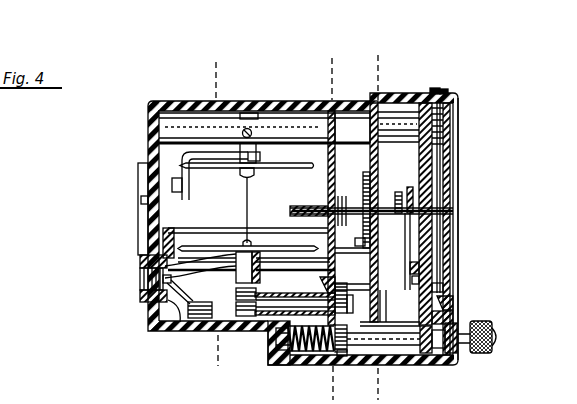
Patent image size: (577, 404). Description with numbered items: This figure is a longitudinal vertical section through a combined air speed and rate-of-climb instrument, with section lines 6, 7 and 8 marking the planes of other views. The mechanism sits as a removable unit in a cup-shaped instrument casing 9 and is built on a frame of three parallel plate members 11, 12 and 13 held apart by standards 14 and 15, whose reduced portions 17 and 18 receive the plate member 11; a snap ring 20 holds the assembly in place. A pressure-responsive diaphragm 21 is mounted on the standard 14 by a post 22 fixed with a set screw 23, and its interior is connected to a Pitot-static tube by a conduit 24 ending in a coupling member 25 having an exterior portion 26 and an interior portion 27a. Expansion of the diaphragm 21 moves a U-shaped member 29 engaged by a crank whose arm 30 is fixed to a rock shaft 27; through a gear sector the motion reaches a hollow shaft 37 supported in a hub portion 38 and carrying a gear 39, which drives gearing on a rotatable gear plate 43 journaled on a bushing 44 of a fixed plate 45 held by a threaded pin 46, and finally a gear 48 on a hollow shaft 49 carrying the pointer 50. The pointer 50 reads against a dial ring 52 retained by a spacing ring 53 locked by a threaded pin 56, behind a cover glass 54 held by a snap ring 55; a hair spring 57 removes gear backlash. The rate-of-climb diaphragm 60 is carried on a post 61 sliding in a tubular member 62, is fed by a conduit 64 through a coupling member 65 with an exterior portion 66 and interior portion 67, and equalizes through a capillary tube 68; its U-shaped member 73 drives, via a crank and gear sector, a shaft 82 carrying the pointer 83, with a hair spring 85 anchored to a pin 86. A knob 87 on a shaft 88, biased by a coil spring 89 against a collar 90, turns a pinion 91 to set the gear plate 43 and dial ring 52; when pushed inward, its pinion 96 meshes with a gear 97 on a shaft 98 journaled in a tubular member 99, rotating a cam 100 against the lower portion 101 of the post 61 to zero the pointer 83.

The section line 6- 6 is at (209, 354).
The section line 7- 7 is at (327, 391).
The section line 8- 8 is at (402, 393).
The instrument casing 9 is at (148, 123).
The plate member 11 is at (373, 300).
The plate member 12 is at (328, 170).
The plate member 13 is at (182, 233).
The standard 14 is at (219, 130).
The standard 15 is at (326, 238).
The reduced portion 17 is at (338, 130).
The reduced portion 18 is at (370, 276).
The snap ring 20 is at (382, 322).
The pressure-responsive diaphragm 21 is at (297, 169).
The post 22 is at (260, 158).
The set screw 23 is at (255, 131).
The conduit 24 is at (192, 186).
The coupling member 25 is at (136, 173).
The exterior portion of coupling member 26 is at (140, 201).
The rock shaft 27 is at (252, 228).
The interior portion of coupling member 27a is at (184, 195).
The U-shaped member 29 is at (255, 176).
The crank arm 30 is at (233, 247).
The hollow shaft 37 is at (406, 235).
The hub portion 38 is at (398, 196).
The gear 39 is at (410, 186).
The gear plate 43 is at (418, 278).
The bushing 44 is at (453, 231).
The fixed plate 45 is at (429, 170).
The threaded pin 46 is at (434, 89).
The gear 48 is at (416, 262).
The hollow shaft 49 is at (444, 196).
The pointer 50 is at (433, 288).
The dial ring 52 is at (450, 303).
The spacing ring 53 is at (455, 319).
The cover glass 54 is at (444, 130).
The snap ring 55 is at (455, 112).
The threaded pin 56 is at (445, 92).
The hair spring 57 is at (364, 182).
The pressure-responsive diaphragm 60 is at (168, 234).
The post 61 is at (240, 282).
The tubular member 62 is at (268, 278).
The conduit 64 is at (214, 270).
The coupling member 65 is at (136, 297).
The exterior portion of coupling member 66 is at (140, 265).
The interior portion of coupling member 67 is at (173, 331).
The capillary tube 68 is at (187, 331).
The U-shaped member 73 is at (250, 242).
The shaft 82 is at (336, 208).
The pointer 83 is at (453, 262).
The hair spring 85 is at (343, 202).
The pin 86 is at (365, 238).
The knob 87 is at (500, 339).
The shaft 88 is at (358, 335).
The coil spring 89 is at (292, 362).
The collar 90 is at (343, 356).
The pinion 91 is at (425, 355).
The pinion 96 is at (345, 353).
The gear 97 is at (343, 284).
The shaft 98 is at (278, 322).
The tubular member 99 is at (270, 333).
The cam 100 is at (255, 310).
The lower portion of post 101 is at (258, 294).